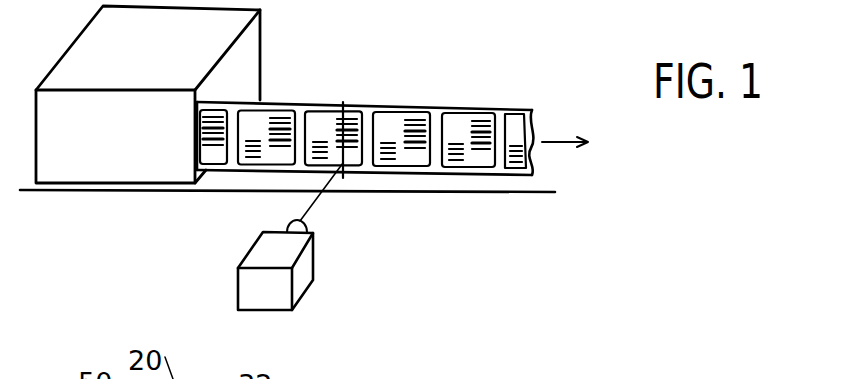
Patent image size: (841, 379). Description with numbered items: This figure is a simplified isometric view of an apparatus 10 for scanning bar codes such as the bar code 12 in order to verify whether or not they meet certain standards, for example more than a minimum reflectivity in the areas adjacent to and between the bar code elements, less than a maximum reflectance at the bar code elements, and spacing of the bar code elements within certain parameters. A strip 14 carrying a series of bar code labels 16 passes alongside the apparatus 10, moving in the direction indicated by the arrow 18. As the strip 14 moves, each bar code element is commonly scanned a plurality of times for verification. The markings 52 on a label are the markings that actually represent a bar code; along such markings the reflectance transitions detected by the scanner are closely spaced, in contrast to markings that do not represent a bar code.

The apparatus 10 is at (252, 248).
The bar code 12 is at (350, 117).
The strip 14 is at (505, 110).
The bar code labels 16 is at (392, 112).
The arrow 18 is at (558, 145).
The markings 52 is at (333, 125).